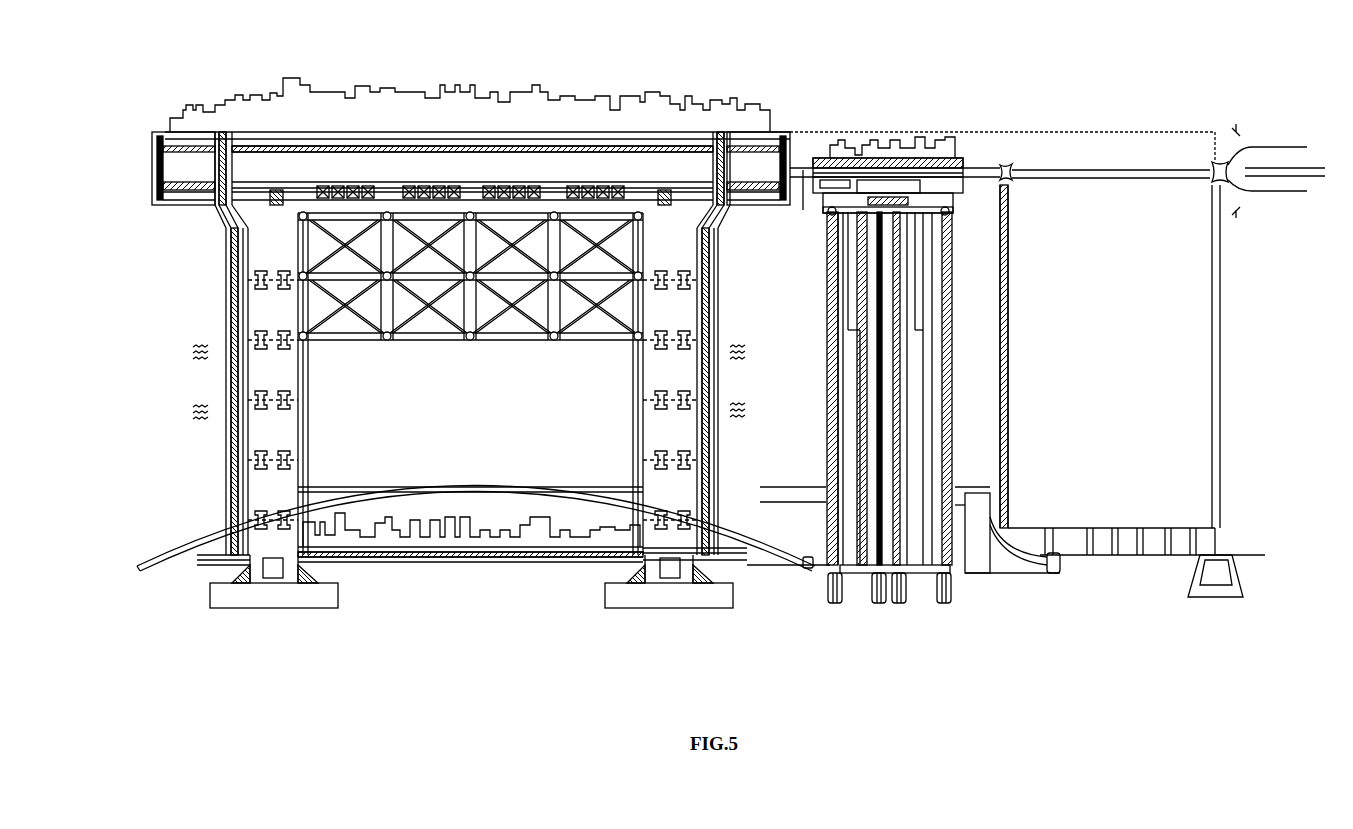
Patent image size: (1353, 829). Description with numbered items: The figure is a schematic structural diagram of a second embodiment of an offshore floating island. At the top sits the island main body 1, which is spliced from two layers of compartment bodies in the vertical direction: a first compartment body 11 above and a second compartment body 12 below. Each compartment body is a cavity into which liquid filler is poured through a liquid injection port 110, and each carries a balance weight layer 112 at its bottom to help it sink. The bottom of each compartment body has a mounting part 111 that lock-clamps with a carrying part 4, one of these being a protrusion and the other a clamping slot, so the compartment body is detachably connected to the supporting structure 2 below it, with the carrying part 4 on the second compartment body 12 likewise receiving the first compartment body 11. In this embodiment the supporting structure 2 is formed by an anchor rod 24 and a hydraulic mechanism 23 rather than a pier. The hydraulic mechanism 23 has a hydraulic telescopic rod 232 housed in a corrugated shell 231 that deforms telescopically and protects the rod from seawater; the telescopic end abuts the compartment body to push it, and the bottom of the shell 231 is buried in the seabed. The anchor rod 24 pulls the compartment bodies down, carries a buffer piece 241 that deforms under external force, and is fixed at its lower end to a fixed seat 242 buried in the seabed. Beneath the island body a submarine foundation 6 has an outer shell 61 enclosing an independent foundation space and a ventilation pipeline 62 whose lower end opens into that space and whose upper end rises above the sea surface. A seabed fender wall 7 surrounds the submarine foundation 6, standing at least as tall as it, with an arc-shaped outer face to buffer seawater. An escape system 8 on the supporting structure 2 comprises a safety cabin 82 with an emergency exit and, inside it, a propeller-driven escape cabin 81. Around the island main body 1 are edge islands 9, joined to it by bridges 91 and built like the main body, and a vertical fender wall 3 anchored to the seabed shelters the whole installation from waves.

The island main body 1 is at (860, 103).
The first compartment body 11 is at (767, 132).
The second compartment body 12 is at (790, 130).
The liquid injection port 110 is at (163, 130).
The mounting part 111 is at (660, 190).
The balance weight layer 112 is at (453, 147).
The carrying part 4 is at (360, 150).
The escape system 8 is at (148, 385).
The escape cabin 81 is at (193, 420).
The safety cabin 82 is at (230, 413).
The submarine foundation 6 is at (562, 530).
The outer shell 61 is at (445, 490).
The ventilation pipeline 62 is at (245, 503).
The edge island 9 is at (913, 157).
The bridge 91 is at (803, 210).
The supporting structure 2 is at (783, 340).
The hydraulic mechanism 23 is at (845, 367).
The shell 231 is at (933, 318).
The hydraulic telescopic rod 232 is at (917, 293).
The anchor rod 24 is at (835, 400).
The buffer piece 241 is at (835, 470).
The fixed seat 242 is at (828, 590).
The seabed fender wall 7 is at (1005, 563).
The fender wall 3 is at (1007, 138).